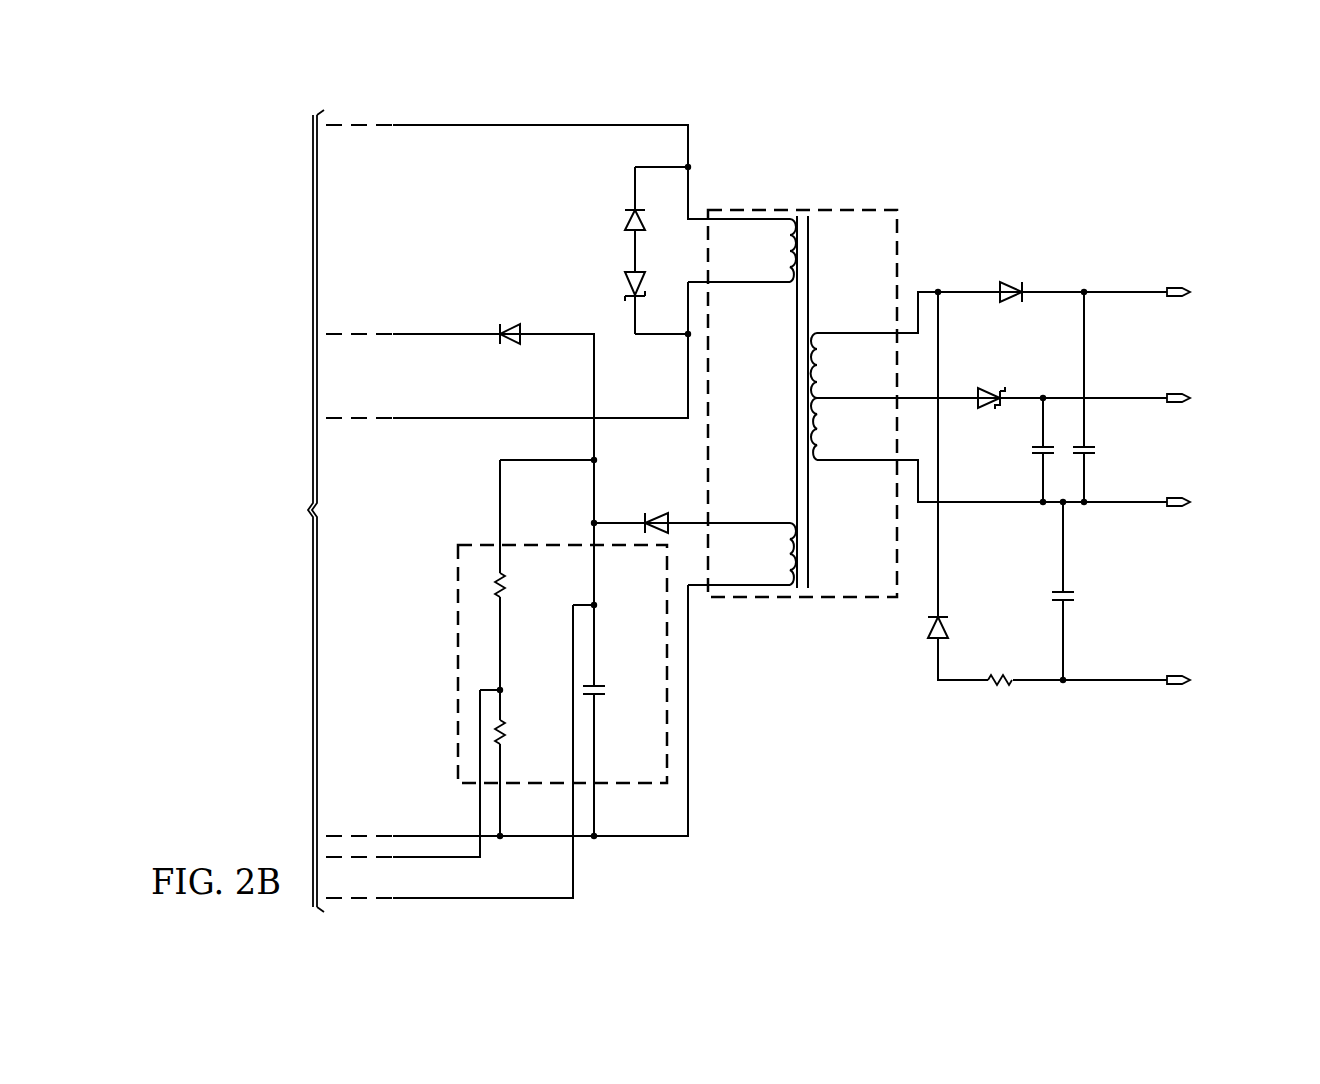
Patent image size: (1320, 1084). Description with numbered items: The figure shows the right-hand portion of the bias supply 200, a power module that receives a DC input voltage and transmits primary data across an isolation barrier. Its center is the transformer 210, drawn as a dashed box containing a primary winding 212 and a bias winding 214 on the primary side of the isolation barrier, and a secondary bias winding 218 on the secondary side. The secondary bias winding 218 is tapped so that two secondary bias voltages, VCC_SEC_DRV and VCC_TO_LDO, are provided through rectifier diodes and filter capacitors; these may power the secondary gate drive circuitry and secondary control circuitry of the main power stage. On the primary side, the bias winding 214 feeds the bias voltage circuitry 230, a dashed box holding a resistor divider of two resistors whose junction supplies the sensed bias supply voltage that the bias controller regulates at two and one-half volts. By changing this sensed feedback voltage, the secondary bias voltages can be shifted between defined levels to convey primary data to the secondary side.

The bias supply 200 is at (970, 165).
The transformer 210 is at (848, 204).
The primary winding 212 is at (792, 286).
The bias winding 214 is at (790, 521).
The secondary bias winding 218 is at (819, 331).
The bias voltage circuitry 230 is at (560, 538).